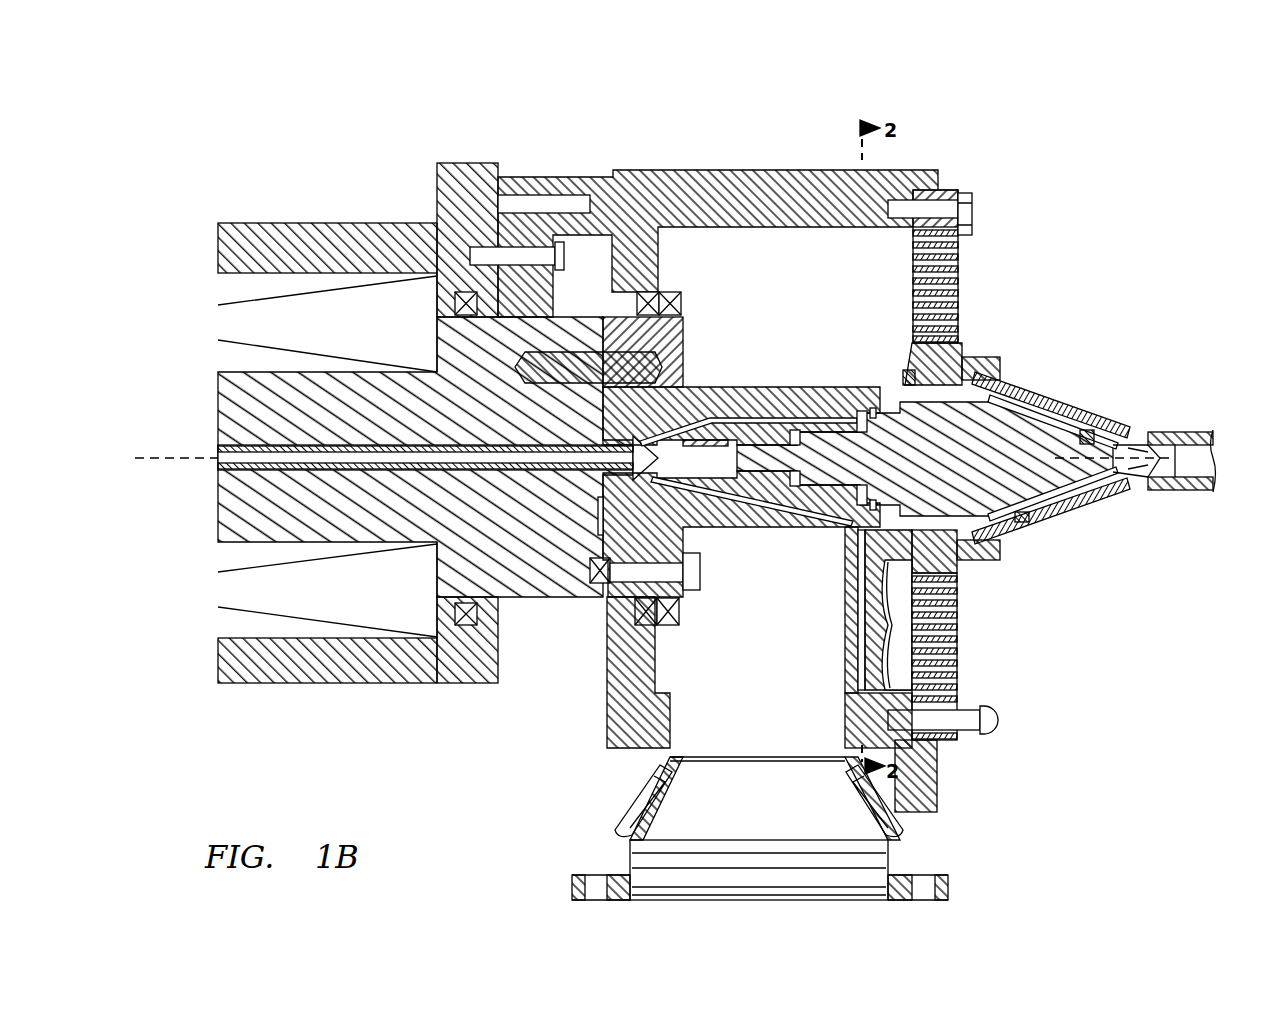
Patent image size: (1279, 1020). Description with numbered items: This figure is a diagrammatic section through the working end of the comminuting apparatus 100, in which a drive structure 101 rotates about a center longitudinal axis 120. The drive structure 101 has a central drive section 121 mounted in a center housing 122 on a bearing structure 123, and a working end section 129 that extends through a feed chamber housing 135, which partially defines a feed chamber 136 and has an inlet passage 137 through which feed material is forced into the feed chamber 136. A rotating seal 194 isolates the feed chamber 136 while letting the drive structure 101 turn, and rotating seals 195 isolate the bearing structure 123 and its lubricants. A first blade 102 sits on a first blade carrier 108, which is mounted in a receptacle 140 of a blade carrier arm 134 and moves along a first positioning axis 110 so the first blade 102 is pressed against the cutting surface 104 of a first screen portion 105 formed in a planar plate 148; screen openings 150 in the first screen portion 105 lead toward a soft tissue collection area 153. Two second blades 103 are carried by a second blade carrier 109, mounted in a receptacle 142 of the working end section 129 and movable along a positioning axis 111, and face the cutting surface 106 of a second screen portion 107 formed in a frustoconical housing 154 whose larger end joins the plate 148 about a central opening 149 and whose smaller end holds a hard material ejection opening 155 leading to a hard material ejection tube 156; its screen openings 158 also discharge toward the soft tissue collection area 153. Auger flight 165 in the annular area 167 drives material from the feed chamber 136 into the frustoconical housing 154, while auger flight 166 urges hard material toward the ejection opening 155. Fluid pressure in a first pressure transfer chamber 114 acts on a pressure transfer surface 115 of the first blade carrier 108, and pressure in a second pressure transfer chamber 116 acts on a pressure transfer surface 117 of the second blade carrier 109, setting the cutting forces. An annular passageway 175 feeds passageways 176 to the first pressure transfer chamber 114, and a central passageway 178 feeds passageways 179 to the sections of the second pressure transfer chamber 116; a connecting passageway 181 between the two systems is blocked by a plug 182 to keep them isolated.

The apparatus 100 is at (230, 100).
The drive structure 101 is at (231, 519).
The first blade 102 is at (872, 670).
The second blade 103 is at (1055, 400).
The cutting surface 104 is at (914, 262).
The first screen portion 105 is at (1000, 265).
The cutting surface 106 is at (1060, 516).
The second screen portion 107 is at (1055, 387).
The first blade carrier 108 is at (892, 655).
The second blade carrier 109 is at (1022, 528).
The first positioning axis 110 is at (887, 623).
The positioning axis 111 is at (1131, 447).
The first pressure transfer chamber 114 is at (862, 598).
The pressure transfer surface 115 is at (878, 614).
The second pressure transfer chamber 116 is at (794, 433).
The pressure transfer surface 117 is at (873, 408).
The center longitudinal axis 120 is at (160, 456).
The central drive section 121 is at (222, 385).
The center housing 122 is at (300, 223).
The bearing structure 123 is at (262, 292).
The working end section 129 is at (691, 387).
The blade carrier arm 134 is at (845, 568).
The feed chamber housing 135 is at (795, 170).
The feed chamber 136 is at (778, 283).
The inlet passage 137 is at (752, 828).
The receptacle 140 is at (852, 716).
The receptacle 142 is at (812, 440).
The planar plate 148 is at (973, 222).
The central opening 149 is at (909, 372).
The screen openings 150 is at (958, 302).
The soft tissue collection area 153 is at (1040, 655).
The frustoconical housing 154 is at (1128, 425).
The hard material ejection opening 155 is at (1160, 472).
The hard material ejection tube 156 is at (1200, 433).
The screen openings 158 is at (1033, 385).
The auger flight 165 is at (975, 364).
The auger flight 166 is at (1090, 432).
The annular area 167 is at (978, 560).
The annular passageway 175 is at (362, 444).
The passageways 176 is at (740, 500).
The central passageway 178 is at (384, 452).
The passageways 179 is at (721, 440).
The connecting passageway 181 is at (607, 500).
The plug 182 is at (605, 515).
The rotating seal 194 is at (666, 292).
The rotating seals 195 is at (440, 235).